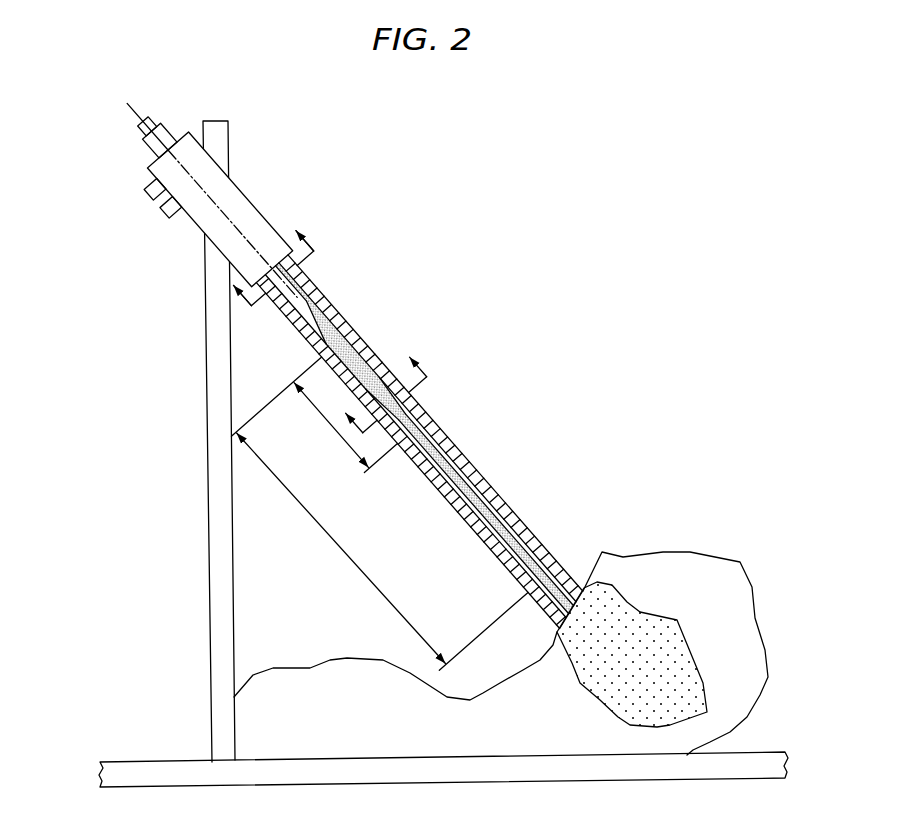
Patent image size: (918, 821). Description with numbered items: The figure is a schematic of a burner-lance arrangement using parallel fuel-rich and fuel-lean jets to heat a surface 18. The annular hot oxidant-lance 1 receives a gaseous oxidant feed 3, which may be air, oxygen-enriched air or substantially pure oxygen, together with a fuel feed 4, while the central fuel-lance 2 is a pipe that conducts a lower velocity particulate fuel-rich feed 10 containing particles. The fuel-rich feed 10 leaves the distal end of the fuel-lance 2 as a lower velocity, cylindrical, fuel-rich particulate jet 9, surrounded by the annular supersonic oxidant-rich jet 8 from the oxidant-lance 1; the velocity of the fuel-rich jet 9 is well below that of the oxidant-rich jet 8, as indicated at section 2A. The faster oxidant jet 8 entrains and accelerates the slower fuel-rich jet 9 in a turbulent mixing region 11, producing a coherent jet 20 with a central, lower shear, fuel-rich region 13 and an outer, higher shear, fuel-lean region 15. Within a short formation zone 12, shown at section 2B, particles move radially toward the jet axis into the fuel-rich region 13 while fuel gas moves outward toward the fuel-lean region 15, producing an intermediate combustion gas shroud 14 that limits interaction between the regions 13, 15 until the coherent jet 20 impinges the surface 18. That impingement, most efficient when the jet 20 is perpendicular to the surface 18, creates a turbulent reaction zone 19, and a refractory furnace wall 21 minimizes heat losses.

The annular hot oxidant-lance 1 is at (248, 191).
The central fuel-lance 2 is at (168, 131).
The gaseous oxidant feed 3 is at (163, 214).
The fuel feed 4 is at (148, 196).
The annular supersonic oxidant-rich jet 8 is at (301, 271).
The fuel-rich particulate jet 9 is at (302, 290).
The fuel-rich feed 10 is at (137, 117).
The turbulent mixing region 11 is at (352, 320).
The formation zone 12 is at (323, 417).
The fuel-rich region 13 is at (432, 430).
The combustion gas shroud 14 is at (472, 470).
The fuel-lean region 15 is at (500, 497).
The surface 18 is at (530, 668).
The turbulent reaction zone 19 is at (633, 628).
The coherent jet 20 is at (320, 524).
The furnace wall 21 is at (233, 577).
The section line 2A is at (282, 276).
The section line 2B is at (377, 383).